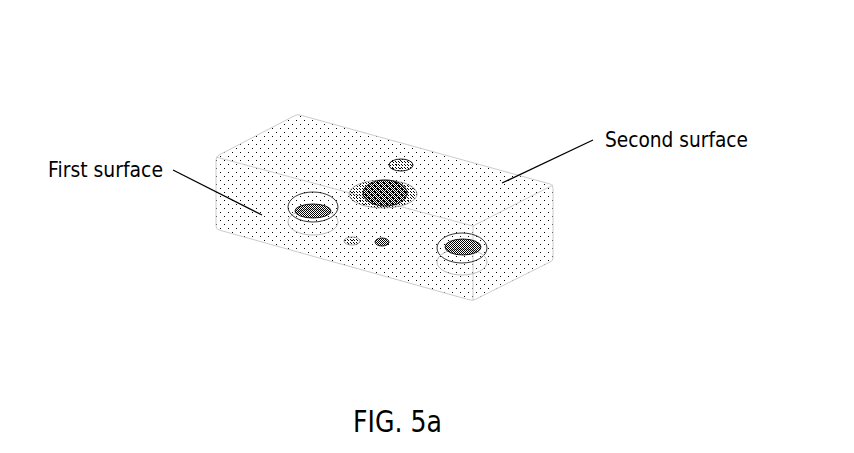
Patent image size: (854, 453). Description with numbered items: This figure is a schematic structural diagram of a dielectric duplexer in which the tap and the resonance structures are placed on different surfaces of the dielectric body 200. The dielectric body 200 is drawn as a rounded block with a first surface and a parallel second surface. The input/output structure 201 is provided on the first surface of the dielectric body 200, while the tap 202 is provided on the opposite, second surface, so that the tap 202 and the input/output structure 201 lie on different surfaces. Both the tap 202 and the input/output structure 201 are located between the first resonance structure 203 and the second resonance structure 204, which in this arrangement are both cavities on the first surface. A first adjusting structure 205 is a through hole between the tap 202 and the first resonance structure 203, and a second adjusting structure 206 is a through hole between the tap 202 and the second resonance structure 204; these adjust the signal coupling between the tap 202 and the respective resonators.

The dielectric body 200 is at (258, 133).
The input/output structure 201 is at (390, 232).
The tap 202 is at (382, 180).
The first resonance structure 203 is at (293, 218).
The second resonance structure 204 is at (480, 258).
The first adjusting structure 205 is at (352, 244).
The second adjusting structure 206 is at (403, 158).